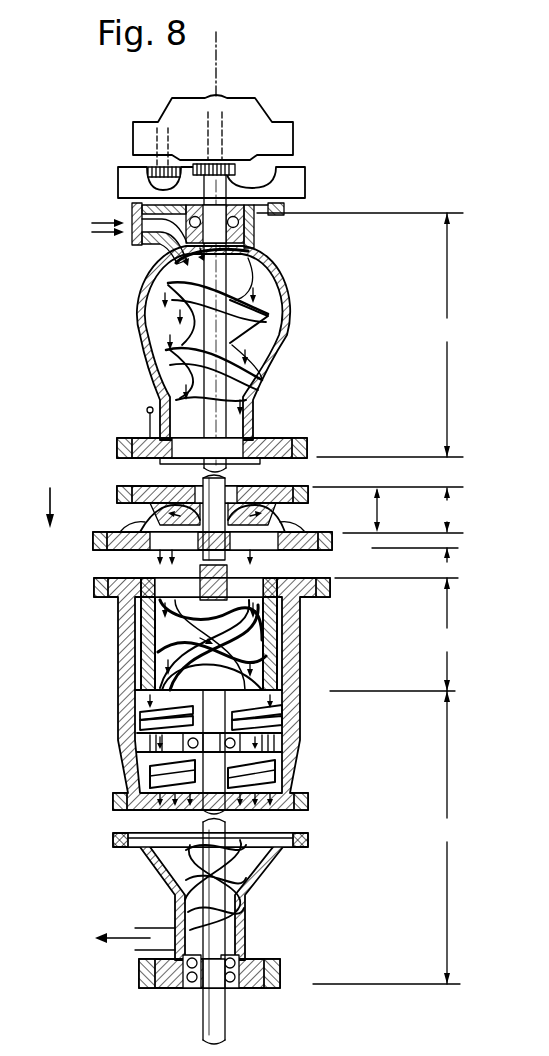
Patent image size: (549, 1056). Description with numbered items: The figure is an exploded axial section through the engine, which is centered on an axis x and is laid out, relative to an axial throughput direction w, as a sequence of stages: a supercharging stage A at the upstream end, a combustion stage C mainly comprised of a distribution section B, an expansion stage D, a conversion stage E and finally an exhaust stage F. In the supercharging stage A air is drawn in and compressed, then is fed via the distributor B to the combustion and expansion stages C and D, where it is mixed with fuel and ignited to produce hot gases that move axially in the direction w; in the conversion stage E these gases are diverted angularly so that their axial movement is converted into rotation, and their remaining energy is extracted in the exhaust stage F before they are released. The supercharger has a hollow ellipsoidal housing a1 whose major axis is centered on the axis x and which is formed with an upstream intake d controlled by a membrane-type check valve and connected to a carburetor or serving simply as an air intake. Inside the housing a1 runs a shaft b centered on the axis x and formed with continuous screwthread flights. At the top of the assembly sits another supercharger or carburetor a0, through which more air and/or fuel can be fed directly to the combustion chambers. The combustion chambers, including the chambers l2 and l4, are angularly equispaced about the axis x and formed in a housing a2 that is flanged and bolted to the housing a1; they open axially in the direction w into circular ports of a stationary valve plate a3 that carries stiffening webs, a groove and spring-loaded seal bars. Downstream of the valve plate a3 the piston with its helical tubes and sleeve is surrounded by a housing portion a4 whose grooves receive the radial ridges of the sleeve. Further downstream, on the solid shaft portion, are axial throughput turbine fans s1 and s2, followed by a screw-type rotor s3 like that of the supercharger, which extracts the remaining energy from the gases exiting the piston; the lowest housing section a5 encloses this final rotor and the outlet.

The axis x is at (216, 50).
The supercharger or carburetor a0 is at (287, 137).
The shaft b is at (252, 240).
The upstream intake d is at (136, 247).
The hollow ellipsoidal housing a1 is at (283, 318).
The housing a2 is at (277, 488).
The combustion chamber l2 is at (275, 518).
The combustion chamber l4 is at (140, 517).
The stationary valve plate a3 is at (283, 551).
The housing portion a4 is at (300, 645).
The axial throughput turbine fan s1 is at (272, 720).
The axial throughput turbine fan s2 is at (270, 767).
The fifth housing section a5 is at (268, 862).
The screw-type rotor s3 is at (240, 917).
The axial throughput direction w is at (50, 493).
The supercharging stage A is at (360, 335).
The distribution section B is at (388, 510).
The combustion stage C is at (446, 510).
The expansion stage D is at (423, 547).
The conversion stage E is at (394, 634).
The exhaust stage F is at (386, 837).